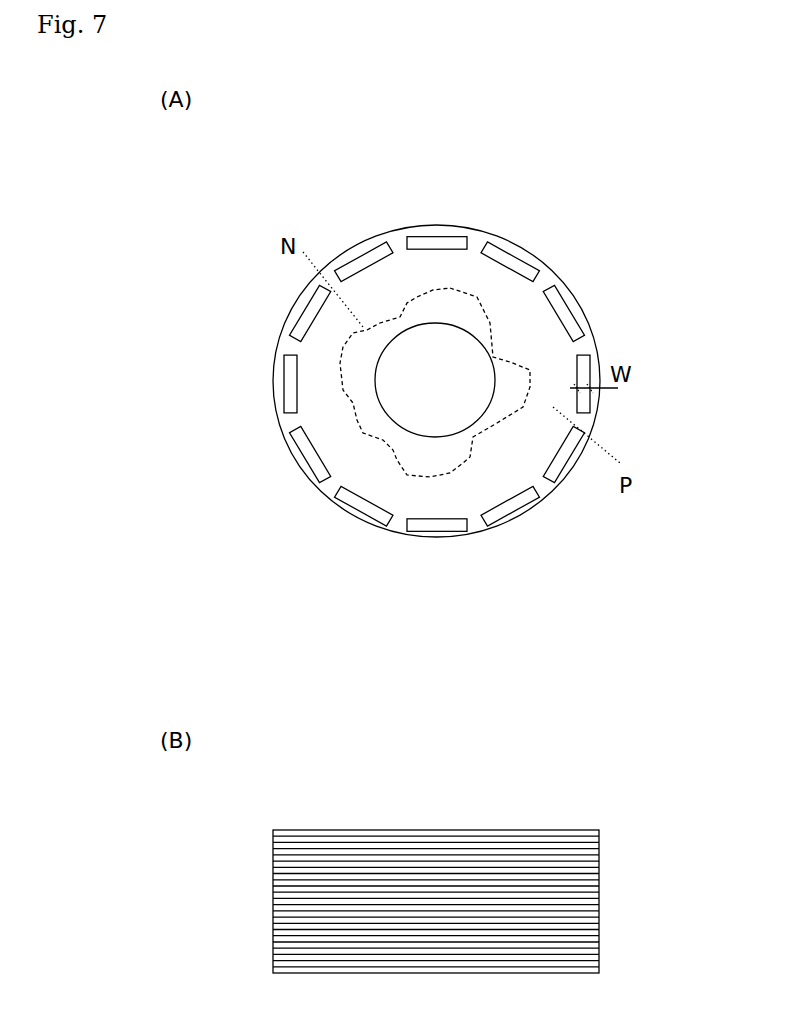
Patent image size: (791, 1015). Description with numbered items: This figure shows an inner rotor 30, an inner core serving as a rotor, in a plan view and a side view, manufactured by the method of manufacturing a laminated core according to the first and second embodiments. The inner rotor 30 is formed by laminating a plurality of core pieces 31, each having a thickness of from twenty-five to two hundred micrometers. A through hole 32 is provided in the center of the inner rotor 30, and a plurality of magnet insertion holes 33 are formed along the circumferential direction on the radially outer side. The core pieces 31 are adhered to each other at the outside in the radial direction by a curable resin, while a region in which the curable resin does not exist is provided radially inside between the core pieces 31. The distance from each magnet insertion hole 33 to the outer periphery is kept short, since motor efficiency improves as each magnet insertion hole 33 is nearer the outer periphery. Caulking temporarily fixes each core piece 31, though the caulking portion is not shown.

The inner rotor 30 is at (476, 564).
The core piece 31 is at (580, 307).
The through hole 32 is at (438, 435).
The magnet insertion hole 33 is at (423, 243).